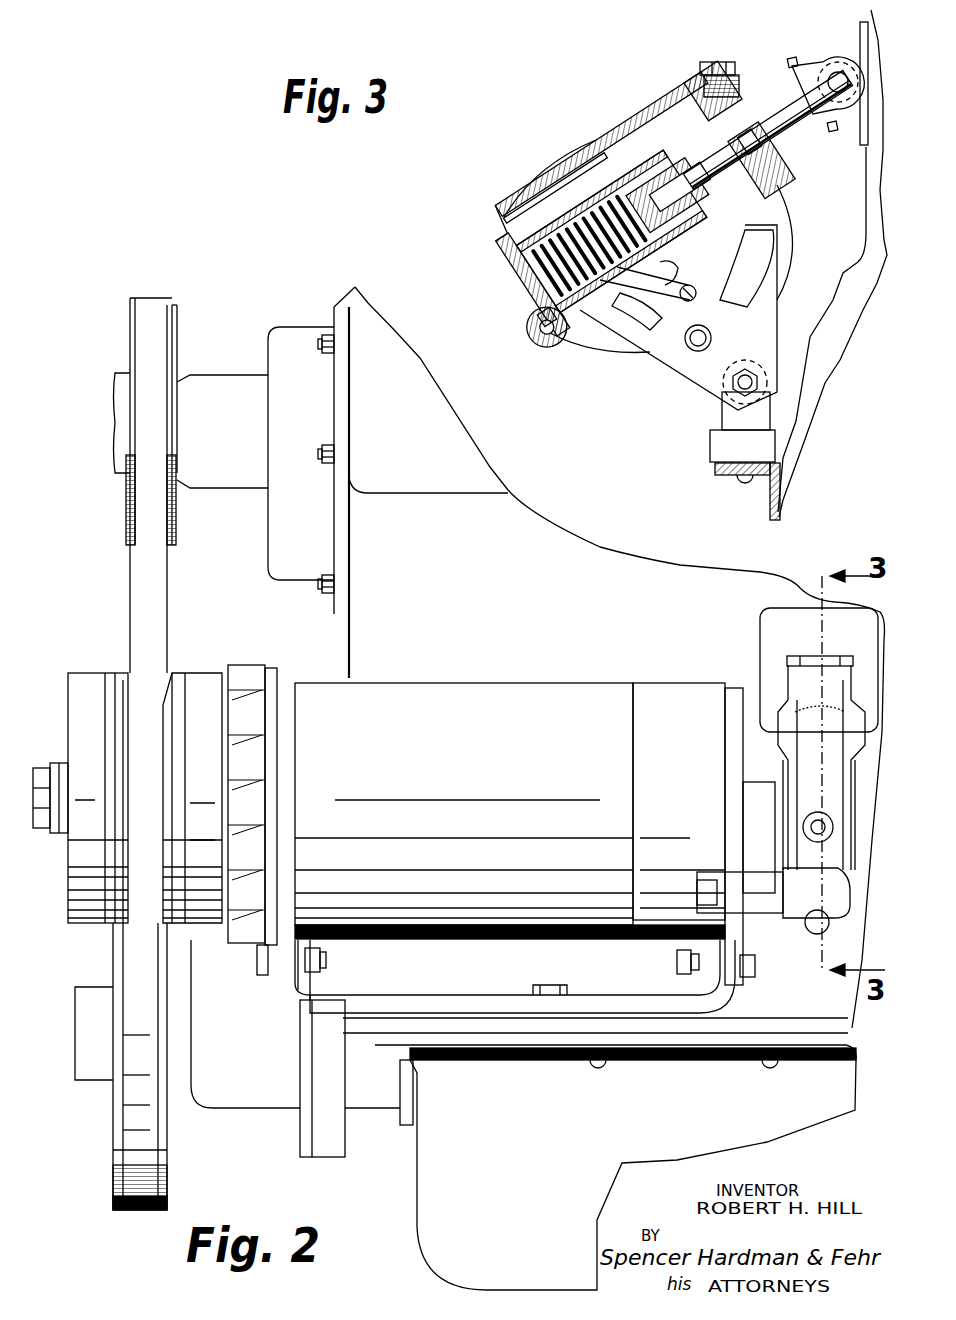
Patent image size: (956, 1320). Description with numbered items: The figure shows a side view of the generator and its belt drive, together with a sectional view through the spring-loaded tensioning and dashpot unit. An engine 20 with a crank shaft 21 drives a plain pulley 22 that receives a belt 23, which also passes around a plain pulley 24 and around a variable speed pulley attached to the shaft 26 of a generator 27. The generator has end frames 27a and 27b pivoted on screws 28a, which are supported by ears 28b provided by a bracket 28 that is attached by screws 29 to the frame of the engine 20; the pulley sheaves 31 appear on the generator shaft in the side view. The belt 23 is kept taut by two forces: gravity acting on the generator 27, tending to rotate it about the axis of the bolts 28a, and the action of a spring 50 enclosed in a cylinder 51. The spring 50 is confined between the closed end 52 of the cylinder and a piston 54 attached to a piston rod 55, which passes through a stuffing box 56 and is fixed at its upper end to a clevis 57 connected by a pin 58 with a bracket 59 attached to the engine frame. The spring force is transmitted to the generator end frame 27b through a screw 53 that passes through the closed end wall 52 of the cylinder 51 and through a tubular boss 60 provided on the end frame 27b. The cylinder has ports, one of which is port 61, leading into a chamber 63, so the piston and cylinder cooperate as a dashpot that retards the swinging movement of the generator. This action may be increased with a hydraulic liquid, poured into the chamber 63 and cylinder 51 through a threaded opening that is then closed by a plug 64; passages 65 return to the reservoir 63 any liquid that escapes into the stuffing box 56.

In FIG. 2, the engine 20 is at (247, 1090).
In FIG. 3, the engine 20 is at (870, 188).
In FIG. 2, the crank shaft 21 is at (95, 1030).
In FIG. 2, the plain pulley 22 is at (113, 1125).
In FIG. 2, the belt 23 is at (149, 300).
In FIG. 2, the plain pulley 24 is at (127, 518).
In FIG. 2, the shaft 26 is at (43, 830).
In FIG. 2, the generator 27 is at (493, 690).
In FIG. 3, the generator 27 is at (650, 350).
In FIG. 2, the end frame 27a is at (265, 975).
In FIG. 2, the end frame 27b is at (745, 964).
In FIG. 3, the end frame 27b is at (596, 140).
In FIG. 2, the bracket 28 is at (468, 995).
In FIG. 3, the bracket 28 is at (732, 440).
In FIG. 2, the screws 28a is at (330, 962).
In FIG. 3, the screws 28a is at (736, 384).
In FIG. 2, the ears 28b is at (300, 995).
In FIG. 3, the ears 28b is at (730, 418).
In FIG. 2, the screws 29 is at (547, 985).
In FIG. 2, the pulley sheave 31 is at (85, 683).
In FIG. 3, the spring 50 is at (608, 200).
In FIG. 3, the cylinder 51 is at (560, 318).
In FIG. 3, the closed end 52 is at (513, 277).
In FIG. 2, the screw 53 is at (833, 918).
In FIG. 3, the screw 53 is at (517, 318).
In FIG. 3, the piston 54 is at (670, 167).
In FIG. 3, the piston rod 55 is at (792, 100).
In FIG. 3, the stuffing box 56 is at (772, 150).
In FIG. 3, the clevis 57 is at (806, 63).
In FIG. 3, the pin 58 is at (836, 76).
In FIG. 3, the bracket 59 is at (862, 40).
In FIG. 2, the tubular boss 60 is at (725, 872).
In FIG. 3, the port 61 is at (588, 183).
In FIG. 2, the chamber 63 is at (803, 686).
In FIG. 3, the chamber 63 is at (630, 140).
In FIG. 2, the plug 64 is at (833, 658).
In FIG. 3, the plug 64 is at (708, 65).
In FIG. 3, the passages 65 is at (712, 128).